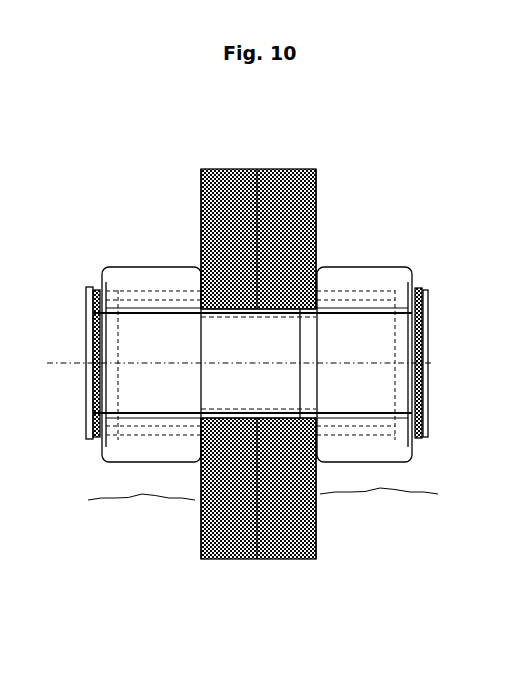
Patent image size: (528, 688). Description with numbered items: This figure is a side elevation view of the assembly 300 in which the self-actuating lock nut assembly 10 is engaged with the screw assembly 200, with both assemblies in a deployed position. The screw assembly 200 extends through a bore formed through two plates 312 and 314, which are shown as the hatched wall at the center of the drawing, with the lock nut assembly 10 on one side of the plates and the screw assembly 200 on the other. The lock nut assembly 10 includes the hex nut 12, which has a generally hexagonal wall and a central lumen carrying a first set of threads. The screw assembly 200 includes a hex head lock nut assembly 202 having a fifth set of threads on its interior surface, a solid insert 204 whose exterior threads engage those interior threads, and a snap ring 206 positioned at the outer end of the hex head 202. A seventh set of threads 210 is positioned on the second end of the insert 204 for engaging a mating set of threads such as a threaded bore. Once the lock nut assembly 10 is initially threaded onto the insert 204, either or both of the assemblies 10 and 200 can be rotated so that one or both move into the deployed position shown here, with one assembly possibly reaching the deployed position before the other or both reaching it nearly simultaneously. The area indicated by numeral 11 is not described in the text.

The assembly 300 is at (282, 624).
The plate 312 is at (295, 193).
The plate 314 is at (213, 202).
The screw assembly 200 is at (370, 388).
The solid insert 204 is at (255, 348).
The seventh set of threads 210 is at (248, 413).
The hex nut 12 is at (140, 262).
The hex head lock nut assembly 202 is at (355, 282).
The snap ring 206 is at (418, 288).
The self-actuating lock nut assembly 10 is at (141, 512).
The second side 11 is at (379, 508).